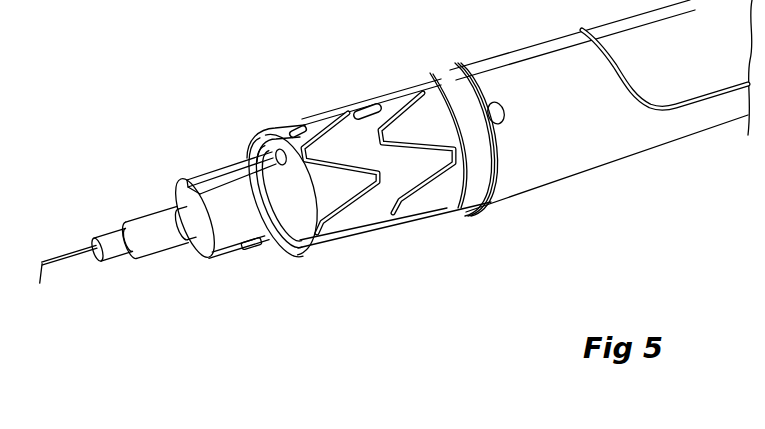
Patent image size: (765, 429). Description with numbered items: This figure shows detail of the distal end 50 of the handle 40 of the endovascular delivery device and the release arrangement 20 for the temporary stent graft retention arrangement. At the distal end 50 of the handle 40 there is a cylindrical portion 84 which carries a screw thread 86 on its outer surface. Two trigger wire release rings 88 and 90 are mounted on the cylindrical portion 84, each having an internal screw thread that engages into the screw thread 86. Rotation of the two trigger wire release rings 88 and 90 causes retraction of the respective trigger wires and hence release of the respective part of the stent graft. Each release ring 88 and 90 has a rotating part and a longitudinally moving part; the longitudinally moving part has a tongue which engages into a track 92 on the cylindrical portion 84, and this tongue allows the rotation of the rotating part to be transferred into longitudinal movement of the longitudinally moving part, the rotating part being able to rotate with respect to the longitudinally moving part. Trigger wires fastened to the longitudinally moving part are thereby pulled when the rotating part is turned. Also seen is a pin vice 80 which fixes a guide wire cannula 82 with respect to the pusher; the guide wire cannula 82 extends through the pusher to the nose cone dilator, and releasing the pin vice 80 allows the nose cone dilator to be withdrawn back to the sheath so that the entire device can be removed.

The release arrangement 20 is at (260, 188).
The handle 40 is at (631, 143).
The distal end 50 is at (588, 204).
The pin vice 80 is at (142, 237).
The guide wire cannula 82 is at (68, 264).
The cylindrical portion 84 is at (238, 247).
The screw thread 86 is at (315, 242).
The trigger wire release ring 88 is at (336, 120).
The trigger wire release ring 90 is at (410, 98).
The track 92 is at (227, 170).